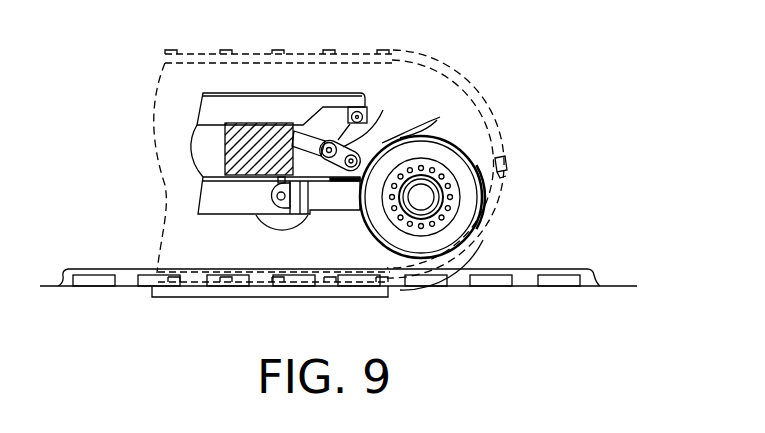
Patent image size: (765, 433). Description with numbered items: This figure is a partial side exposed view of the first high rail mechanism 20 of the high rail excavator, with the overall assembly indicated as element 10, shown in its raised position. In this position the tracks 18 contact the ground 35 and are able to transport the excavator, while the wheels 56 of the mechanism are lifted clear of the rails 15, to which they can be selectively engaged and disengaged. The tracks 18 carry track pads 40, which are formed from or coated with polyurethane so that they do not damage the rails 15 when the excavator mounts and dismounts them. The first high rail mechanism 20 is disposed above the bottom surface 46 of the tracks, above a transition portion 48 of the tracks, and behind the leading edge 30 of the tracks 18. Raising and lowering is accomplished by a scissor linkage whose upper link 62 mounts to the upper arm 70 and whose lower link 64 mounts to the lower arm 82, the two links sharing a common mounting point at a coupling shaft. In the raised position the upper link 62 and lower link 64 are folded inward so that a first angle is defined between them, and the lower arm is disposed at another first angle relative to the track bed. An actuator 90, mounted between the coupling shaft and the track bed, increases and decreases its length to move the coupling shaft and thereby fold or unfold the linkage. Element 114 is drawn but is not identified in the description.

The vehicle 10 is at (116, 121).
The rails 15 is at (565, 269).
The tracks 18 is at (413, 57).
The first high rail mechanism 20 is at (452, 105).
The leading edge 30 is at (503, 163).
The ground 35 is at (603, 288).
The track pads 40 is at (482, 103).
The bottom surface 46 is at (287, 298).
The transition portion 48 is at (493, 236).
The wheels 56 is at (468, 200).
The upper link 62 is at (343, 133).
The lower link 64 is at (437, 120).
The upper arm 70 is at (250, 102).
The lower arm 82 is at (332, 198).
The actuator 90 is at (303, 140).
The clamp 114 is at (280, 210).